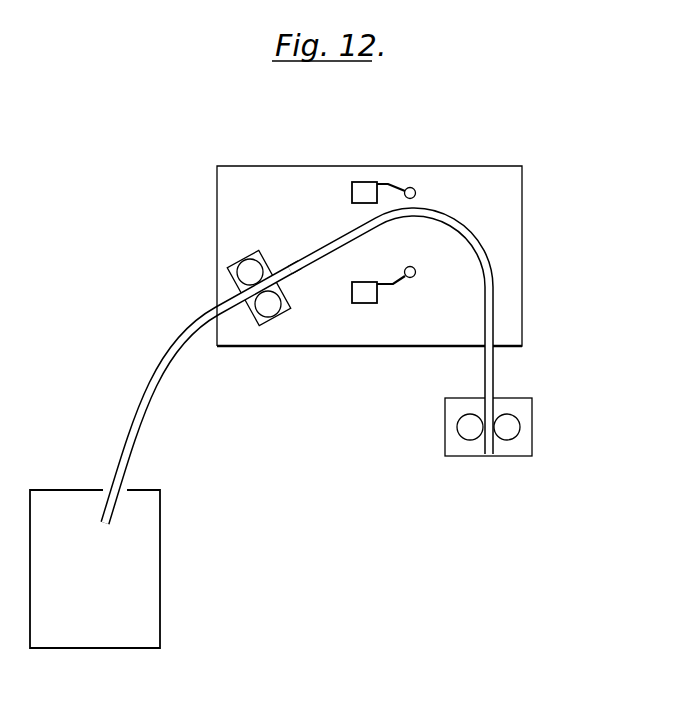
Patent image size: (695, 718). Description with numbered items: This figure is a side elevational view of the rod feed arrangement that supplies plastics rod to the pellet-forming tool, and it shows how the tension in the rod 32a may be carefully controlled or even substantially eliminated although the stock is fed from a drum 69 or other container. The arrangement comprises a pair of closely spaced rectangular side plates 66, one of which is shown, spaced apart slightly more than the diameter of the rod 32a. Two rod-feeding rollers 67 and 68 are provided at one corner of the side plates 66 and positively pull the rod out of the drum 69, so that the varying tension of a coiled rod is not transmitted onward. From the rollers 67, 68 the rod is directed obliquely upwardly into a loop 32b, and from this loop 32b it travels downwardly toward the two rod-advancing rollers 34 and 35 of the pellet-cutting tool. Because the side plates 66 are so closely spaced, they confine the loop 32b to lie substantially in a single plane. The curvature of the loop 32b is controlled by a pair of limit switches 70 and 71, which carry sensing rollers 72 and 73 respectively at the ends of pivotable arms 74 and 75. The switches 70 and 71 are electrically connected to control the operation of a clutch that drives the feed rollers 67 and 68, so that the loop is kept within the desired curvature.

The rod 32a is at (138, 415).
The loop 32b is at (463, 228).
The rod-advancing roller 34 is at (465, 430).
The rod-advancing roller 35 is at (510, 427).
The side plates 66 is at (463, 165).
The rod-feeding roller 67 is at (247, 278).
The rod-feeding roller 68 is at (268, 307).
The drum 69 is at (160, 541).
The limit switch 70 is at (363, 188).
The limit switch 71 is at (363, 298).
The sensing roller 72 is at (412, 188).
The sensing roller 73 is at (415, 270).
The pivotable arm 74 is at (385, 182).
The pivotable arm 75 is at (397, 284).